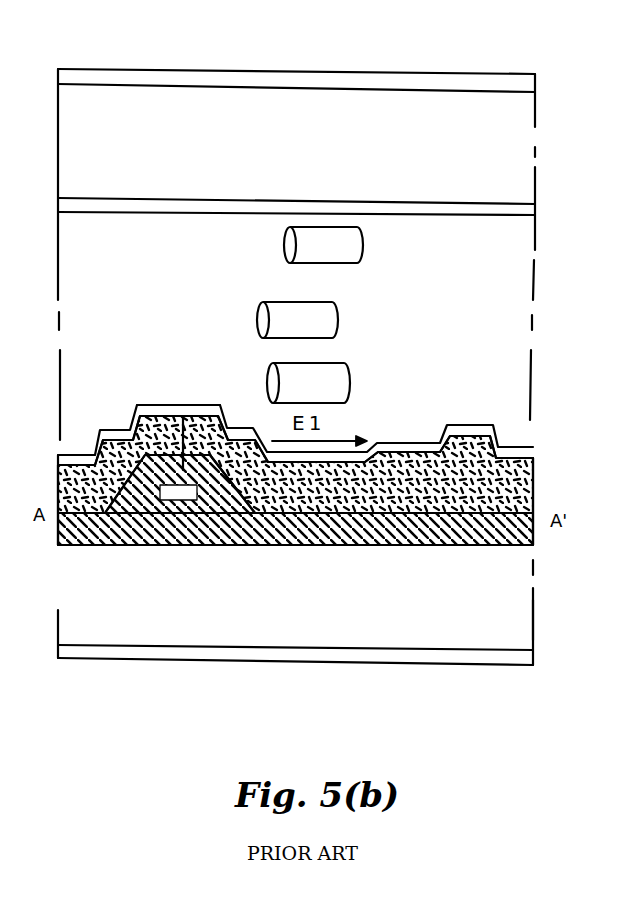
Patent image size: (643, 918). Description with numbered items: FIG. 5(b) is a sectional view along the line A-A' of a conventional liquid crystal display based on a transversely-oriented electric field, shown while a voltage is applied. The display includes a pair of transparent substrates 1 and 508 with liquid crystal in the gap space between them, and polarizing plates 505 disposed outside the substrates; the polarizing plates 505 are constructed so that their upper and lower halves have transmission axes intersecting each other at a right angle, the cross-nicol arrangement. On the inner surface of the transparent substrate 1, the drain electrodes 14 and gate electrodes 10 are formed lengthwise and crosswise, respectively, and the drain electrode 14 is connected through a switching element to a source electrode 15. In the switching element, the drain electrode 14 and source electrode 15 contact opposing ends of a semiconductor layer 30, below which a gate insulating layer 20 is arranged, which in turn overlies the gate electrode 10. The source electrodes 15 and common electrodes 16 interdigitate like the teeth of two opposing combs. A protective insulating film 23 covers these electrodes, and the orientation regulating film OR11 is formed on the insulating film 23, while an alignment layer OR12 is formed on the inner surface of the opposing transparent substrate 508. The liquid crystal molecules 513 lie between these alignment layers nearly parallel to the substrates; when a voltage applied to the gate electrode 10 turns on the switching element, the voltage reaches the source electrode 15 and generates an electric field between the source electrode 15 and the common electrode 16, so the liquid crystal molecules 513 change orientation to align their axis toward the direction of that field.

The polarizing plate 505 is at (530, 80).
The opposing substrate 508 is at (505, 176).
The alignment layer OR12 is at (503, 213).
The liquid crystal molecules 513 is at (325, 382).
The orientation regulating film OR11 is at (503, 424).
The drain electrode 14 is at (137, 420).
The protective insulating film 23 is at (536, 492).
The gate insulating layer 20 is at (534, 537).
The gate electrode 10 is at (167, 544).
The common electrode 16 is at (408, 548).
The source electrode 15 is at (222, 407).
The semiconductor layer 30 is at (176, 410).
The transparent substrate 1 is at (535, 626).